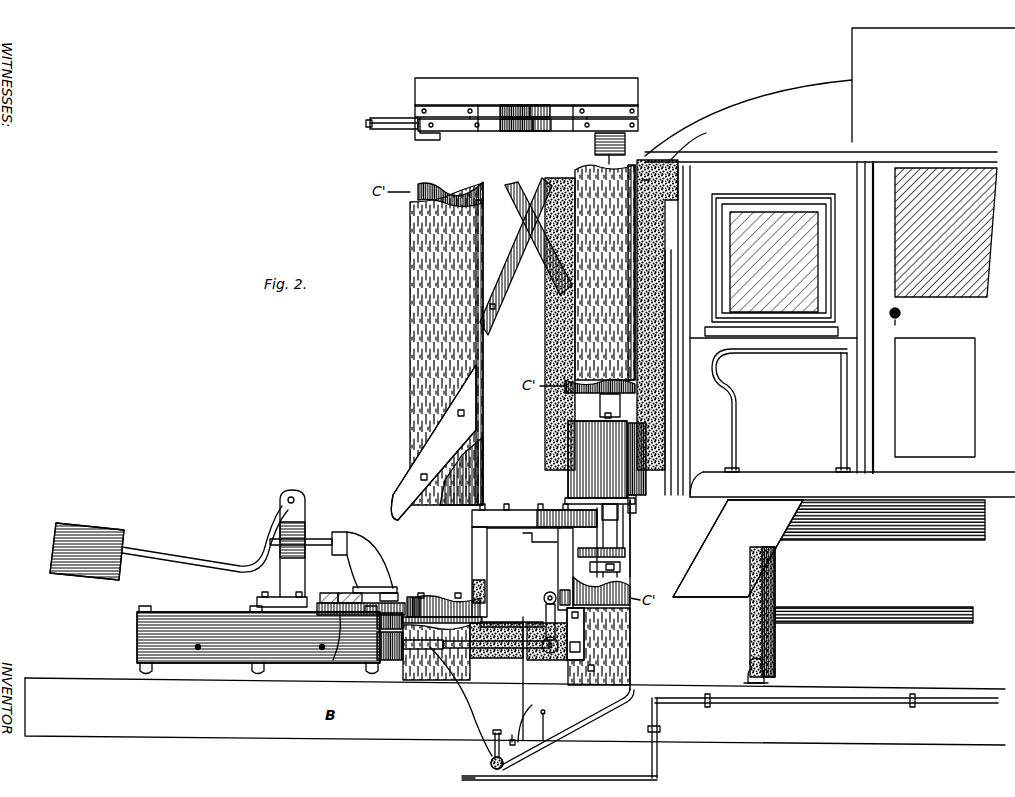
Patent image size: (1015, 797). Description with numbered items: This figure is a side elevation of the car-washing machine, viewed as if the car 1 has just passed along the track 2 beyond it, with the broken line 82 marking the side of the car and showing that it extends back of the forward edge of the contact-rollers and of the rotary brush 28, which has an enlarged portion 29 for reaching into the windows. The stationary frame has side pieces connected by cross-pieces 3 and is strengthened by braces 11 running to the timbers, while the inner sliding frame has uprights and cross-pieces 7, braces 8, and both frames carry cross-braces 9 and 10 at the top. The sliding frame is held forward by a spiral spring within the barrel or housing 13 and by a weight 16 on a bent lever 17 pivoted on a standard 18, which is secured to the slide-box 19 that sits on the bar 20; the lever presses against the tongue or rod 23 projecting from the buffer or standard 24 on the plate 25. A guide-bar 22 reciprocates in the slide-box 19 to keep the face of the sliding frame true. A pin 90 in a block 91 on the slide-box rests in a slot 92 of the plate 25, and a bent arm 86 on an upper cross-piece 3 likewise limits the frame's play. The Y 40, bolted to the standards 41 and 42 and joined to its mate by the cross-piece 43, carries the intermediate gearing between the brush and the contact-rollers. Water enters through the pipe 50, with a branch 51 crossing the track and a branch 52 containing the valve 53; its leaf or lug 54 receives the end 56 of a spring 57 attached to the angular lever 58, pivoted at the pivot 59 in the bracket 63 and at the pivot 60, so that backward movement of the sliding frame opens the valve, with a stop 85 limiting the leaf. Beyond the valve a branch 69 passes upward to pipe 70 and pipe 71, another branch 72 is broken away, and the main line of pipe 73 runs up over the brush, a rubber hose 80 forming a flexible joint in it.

The car 1 is at (840, 330).
The track 2 is at (745, 673).
The cross-pieces 3 is at (437, 108).
The cross-pieces 7 is at (470, 132).
The braces 8 is at (513, 193).
The cross-braces 9 is at (497, 131).
The cross-braces 10 is at (505, 107).
The braces 11 is at (437, 351).
The barrel or housing 13 is at (391, 118).
The weight 16 is at (97, 530).
The bent lever 17 is at (205, 539).
The standard 18 is at (305, 516).
The slide-box 19 is at (200, 620).
The bar 20 is at (392, 660).
The guide-bar 22 is at (368, 607).
The tongue or rod 23 is at (320, 545).
The buffer or standard 24 is at (371, 545).
The plate 25 is at (392, 592).
The brush 28 is at (591, 457).
The enlarged portion 29 is at (507, 306).
The Y's 40 is at (521, 518).
The standard 41 is at (487, 566).
The standard 42 is at (558, 555).
The cross-piece 43 is at (530, 541).
The pipe 50 is at (456, 777).
The branch 51 is at (657, 757).
The branch 52 is at (567, 730).
The valve 53 is at (491, 761).
The leaf or lug 54 is at (493, 732).
The end of spring 56 is at (512, 735).
The spring 57 is at (464, 718).
The angular lever 58 is at (497, 640).
The pivot 59 is at (551, 653).
The pivot 60 is at (549, 592).
The bracket 63 is at (578, 634).
The branch 69 is at (510, 678).
The pipe 70 is at (538, 617).
The pipe 71 is at (632, 540).
The branch 72 is at (554, 723).
The main line of pipe 73 is at (640, 650).
The rubber hose 80 is at (642, 180).
The broken line 82 is at (830, 95).
The stop 85 is at (536, 713).
The bent arm 86 is at (430, 136).
The pin 90 is at (325, 588).
The block 91 is at (335, 658).
The slot 92 is at (344, 592).